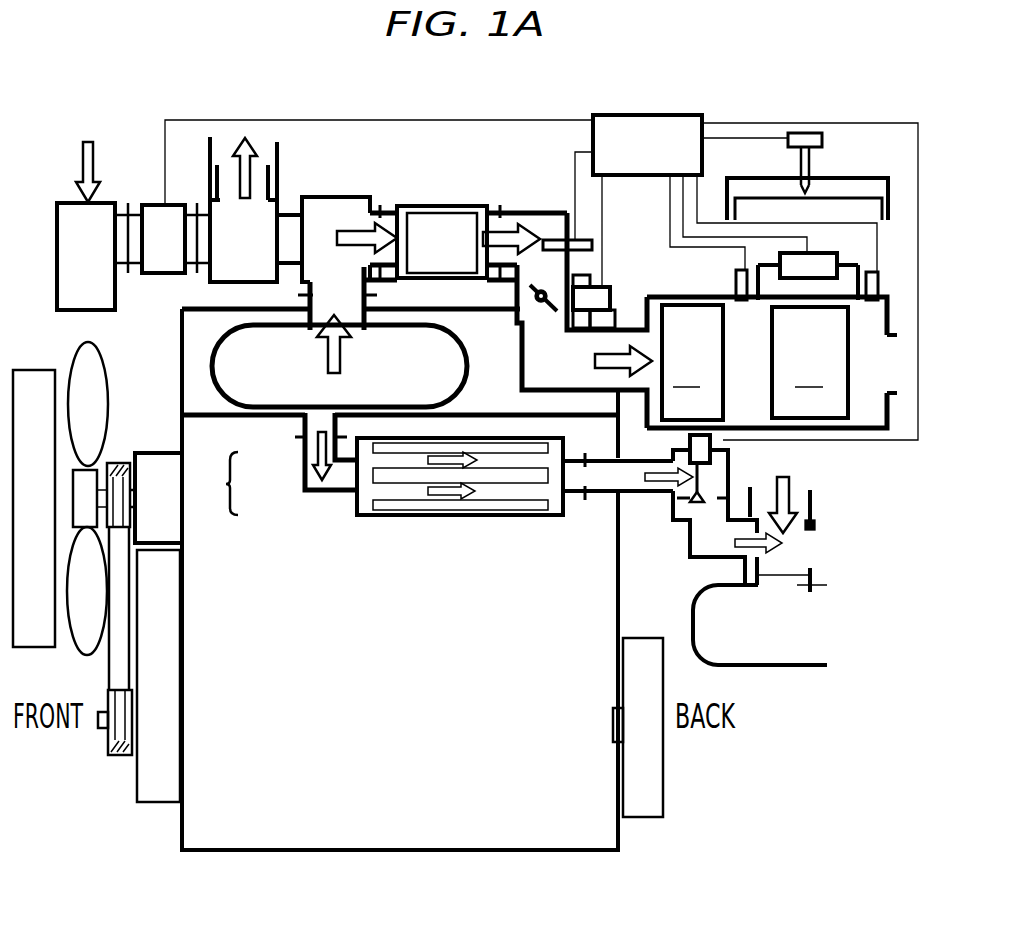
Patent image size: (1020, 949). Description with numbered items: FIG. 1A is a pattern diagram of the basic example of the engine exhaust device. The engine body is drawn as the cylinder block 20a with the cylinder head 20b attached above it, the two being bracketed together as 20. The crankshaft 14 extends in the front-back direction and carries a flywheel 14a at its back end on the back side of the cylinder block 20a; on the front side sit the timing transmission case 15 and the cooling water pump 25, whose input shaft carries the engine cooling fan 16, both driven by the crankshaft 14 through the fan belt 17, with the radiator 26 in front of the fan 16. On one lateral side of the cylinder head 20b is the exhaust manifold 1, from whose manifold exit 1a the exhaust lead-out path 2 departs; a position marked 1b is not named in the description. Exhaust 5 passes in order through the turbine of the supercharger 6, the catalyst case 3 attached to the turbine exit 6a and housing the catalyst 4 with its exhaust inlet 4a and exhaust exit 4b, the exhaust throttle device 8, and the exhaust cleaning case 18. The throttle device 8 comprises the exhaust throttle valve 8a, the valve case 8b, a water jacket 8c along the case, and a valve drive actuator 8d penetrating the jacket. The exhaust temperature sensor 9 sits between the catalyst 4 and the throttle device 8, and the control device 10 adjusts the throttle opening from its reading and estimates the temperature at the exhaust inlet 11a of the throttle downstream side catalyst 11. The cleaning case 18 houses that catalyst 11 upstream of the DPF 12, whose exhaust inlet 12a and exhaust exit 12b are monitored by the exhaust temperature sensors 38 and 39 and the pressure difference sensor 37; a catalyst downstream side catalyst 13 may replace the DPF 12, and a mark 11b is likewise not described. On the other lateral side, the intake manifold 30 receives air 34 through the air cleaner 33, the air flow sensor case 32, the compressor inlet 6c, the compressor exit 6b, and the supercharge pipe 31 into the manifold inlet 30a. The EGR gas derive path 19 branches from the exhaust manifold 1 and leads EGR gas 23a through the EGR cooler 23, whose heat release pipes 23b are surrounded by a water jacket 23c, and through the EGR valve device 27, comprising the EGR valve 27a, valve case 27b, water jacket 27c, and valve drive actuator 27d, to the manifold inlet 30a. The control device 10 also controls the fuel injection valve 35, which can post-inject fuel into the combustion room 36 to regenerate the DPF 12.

The exhaust manifold 1 is at (238, 372).
The manifold exit 1a is at (317, 310).
The exhaust port 1b is at (403, 327).
The exhaust lead-out path 2 is at (517, 205).
The catalyst case 3 is at (425, 228).
The catalyst 4 is at (416, 204).
The exhaust inlet 4a is at (402, 214).
The exhaust exit 4b is at (489, 213).
The exhaust 5 is at (350, 225).
The supercharger 6 is at (318, 193).
The turbine exit 6a is at (395, 218).
The compressor exit 6b is at (216, 190).
The compressor inlet 6c is at (205, 258).
The exhaust throttle device 8 is at (591, 289).
The exhaust throttle valve 8a is at (528, 292).
The valve case 8b is at (517, 320).
The water jacket 8c is at (594, 288).
The valve drive actuator 8d is at (602, 288).
The exhaust temperature sensor 9 is at (557, 240).
The control device 10 is at (620, 130).
The throttle downstream side catalyst 11 is at (692, 362).
The exhaust inlet 11a is at (655, 330).
The heat storage outlet passage 11b is at (725, 362).
The DPF 12 is at (810, 362).
The exhaust inlet 12a is at (768, 412).
The exhaust exit 12b is at (850, 360).
The catalyst downstream side catalyst 13 is at (840, 420).
The crankshaft 14 is at (100, 728).
The flywheel 14a is at (650, 778).
The timing transmission case 15 is at (158, 767).
The engine cooling fan 16 is at (92, 388).
The fan belt 17 is at (120, 660).
The exhaust cleaning case 18 is at (905, 442).
The EGR gas derive path 19 is at (389, 527).
The coolant passage 20 is at (215, 483).
The cylinder block 20a is at (278, 550).
The cylinder head 20b is at (283, 413).
The EGR cooler 23 is at (447, 521).
The EGR gas 23a is at (323, 490).
The heat release pipes 23b is at (412, 505).
The water jacket 23c is at (513, 507).
The cooling water pump 25 is at (152, 475).
The radiator 26 is at (45, 383).
The EGR valve device 27 is at (718, 447).
The EGR valve 27a is at (680, 508).
The valve case 27b is at (680, 535).
The water jacket 27c is at (730, 458).
The valve drive actuator 27d is at (688, 447).
The intake manifold 30 is at (693, 606).
The manifold inlet 30a is at (822, 585).
The supercharge pipe 31 is at (208, 152).
The air flow sensor case 32 is at (152, 217).
The air cleaner 33 is at (70, 243).
The air 34 is at (75, 160).
The fuel injection valve 35 is at (800, 133).
The combustion room 36 is at (840, 192).
The pressure difference sensor 37 is at (822, 265).
The exhaust temperature sensor 38 is at (737, 275).
The exhaust temperature sensor 39 is at (880, 285).